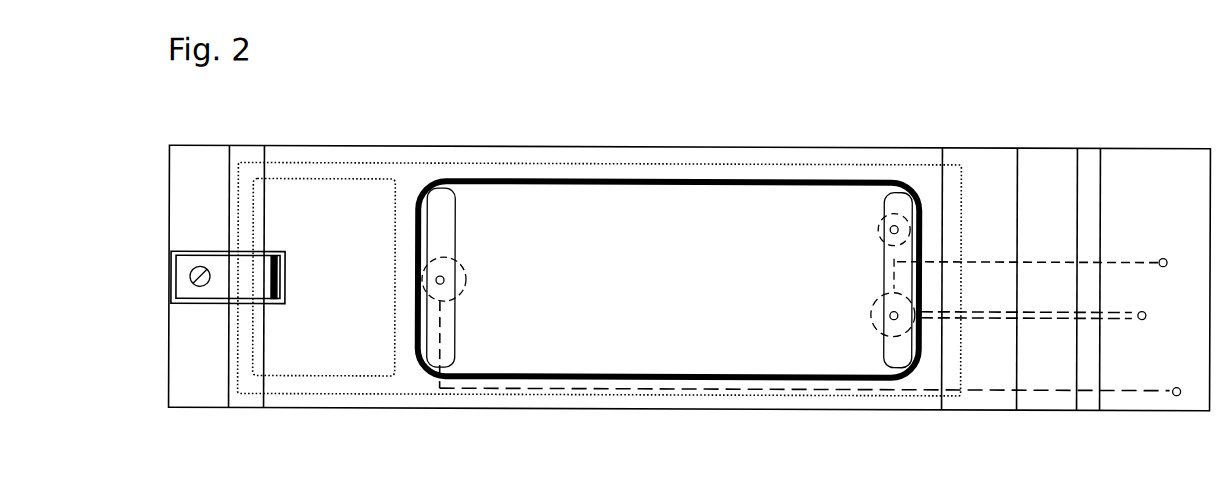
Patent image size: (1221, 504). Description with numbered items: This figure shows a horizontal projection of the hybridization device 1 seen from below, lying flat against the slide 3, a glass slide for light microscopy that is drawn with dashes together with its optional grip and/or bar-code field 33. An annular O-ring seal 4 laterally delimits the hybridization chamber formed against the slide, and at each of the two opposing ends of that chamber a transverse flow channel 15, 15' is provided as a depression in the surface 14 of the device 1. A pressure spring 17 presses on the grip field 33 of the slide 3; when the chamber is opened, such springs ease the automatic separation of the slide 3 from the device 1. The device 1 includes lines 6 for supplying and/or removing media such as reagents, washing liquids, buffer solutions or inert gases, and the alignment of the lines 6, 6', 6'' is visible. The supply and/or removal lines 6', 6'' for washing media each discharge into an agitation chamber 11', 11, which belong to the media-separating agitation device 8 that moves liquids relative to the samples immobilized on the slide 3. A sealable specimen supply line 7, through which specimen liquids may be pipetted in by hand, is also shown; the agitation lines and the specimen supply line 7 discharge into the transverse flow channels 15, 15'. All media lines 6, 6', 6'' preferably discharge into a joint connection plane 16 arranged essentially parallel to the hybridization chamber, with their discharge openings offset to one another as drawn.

The device 1 is at (189, 209).
The pressure spring 17 is at (222, 289).
The grip and/or bar-code field 33 is at (319, 181).
The slide 3 is at (956, 185).
The O-ring seal 4 is at (810, 180).
The surface of the device 14 is at (618, 292).
The transverse flow channel 15 is at (837, 280).
The transverse flow channel 15' is at (475, 277).
The specimen supply line 7 is at (897, 227).
The media-separating agitation device 8 is at (830, 321).
The agitation chamber 11 is at (893, 315).
The agitation chamber 11' is at (473, 301).
The line for supplying and/or removing media 6 is at (1033, 296).
The supply and/or removal line 6' is at (810, 348).
The supply and/or removal line 6'' is at (1030, 239).
The joint connection plane 16 is at (1127, 296).